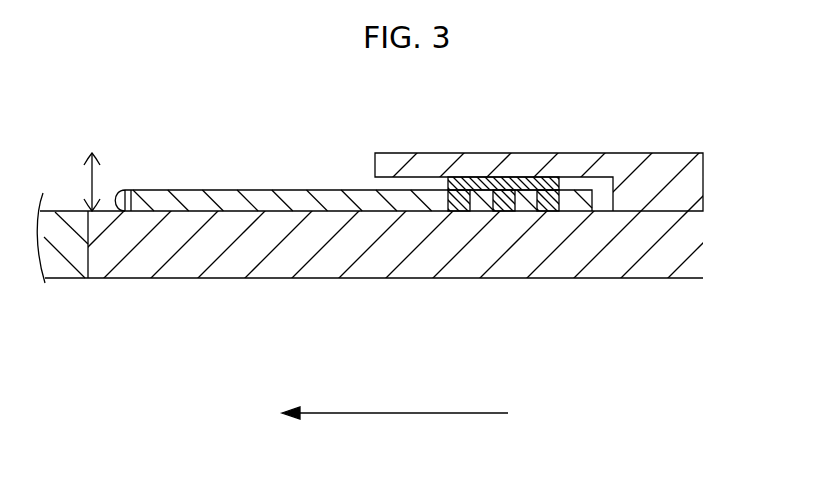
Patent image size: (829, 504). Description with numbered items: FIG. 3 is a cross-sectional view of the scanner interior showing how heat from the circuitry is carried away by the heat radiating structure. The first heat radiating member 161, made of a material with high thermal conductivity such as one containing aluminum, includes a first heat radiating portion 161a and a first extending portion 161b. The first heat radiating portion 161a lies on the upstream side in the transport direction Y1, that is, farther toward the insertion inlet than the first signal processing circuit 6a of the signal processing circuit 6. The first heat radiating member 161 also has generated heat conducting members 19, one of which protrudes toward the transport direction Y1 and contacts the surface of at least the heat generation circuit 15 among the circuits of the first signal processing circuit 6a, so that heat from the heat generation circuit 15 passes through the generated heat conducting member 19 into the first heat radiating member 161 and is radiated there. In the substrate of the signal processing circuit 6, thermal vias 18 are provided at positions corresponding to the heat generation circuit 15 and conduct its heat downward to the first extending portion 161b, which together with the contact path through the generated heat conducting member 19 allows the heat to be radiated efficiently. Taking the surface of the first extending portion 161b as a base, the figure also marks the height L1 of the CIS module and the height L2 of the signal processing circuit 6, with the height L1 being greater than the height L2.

The first heat radiating member 161 is at (422, 236).
The first heat radiating portion 161a is at (660, 165).
The first extending portion 161b is at (325, 263).
The signal processing circuit 6 is at (353, 172).
The first signal processing circuit 6a is at (258, 190).
The heat generation circuit 15 is at (517, 176).
The thermal vias 18 is at (547, 203).
The generated heat conducting member 19 is at (447, 153).
The height of the CIS module L1 is at (82, 182).
The height of the signal processing circuit L2 is at (113, 203).
The transport direction Y1 is at (395, 414).